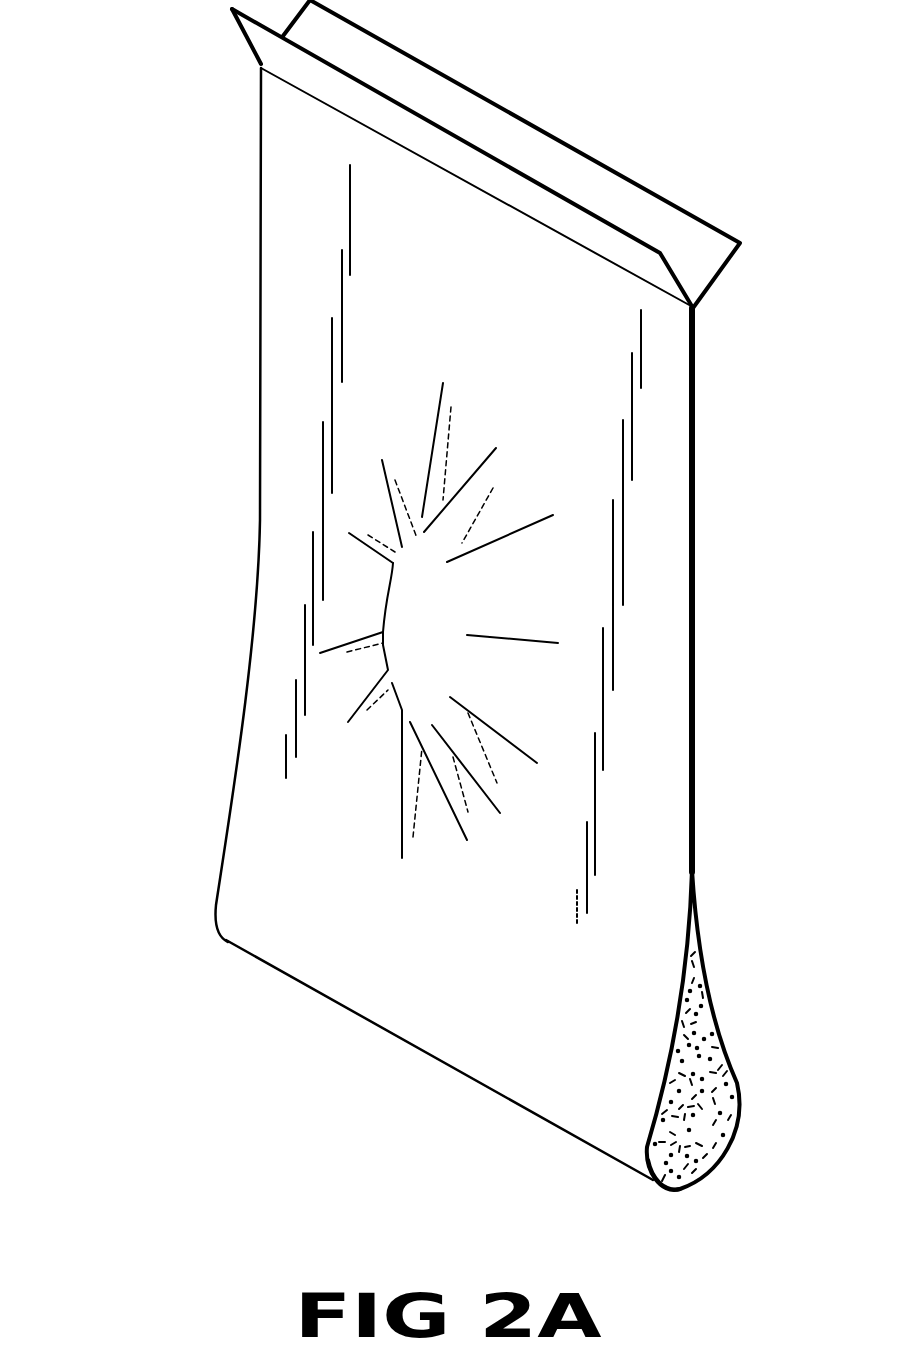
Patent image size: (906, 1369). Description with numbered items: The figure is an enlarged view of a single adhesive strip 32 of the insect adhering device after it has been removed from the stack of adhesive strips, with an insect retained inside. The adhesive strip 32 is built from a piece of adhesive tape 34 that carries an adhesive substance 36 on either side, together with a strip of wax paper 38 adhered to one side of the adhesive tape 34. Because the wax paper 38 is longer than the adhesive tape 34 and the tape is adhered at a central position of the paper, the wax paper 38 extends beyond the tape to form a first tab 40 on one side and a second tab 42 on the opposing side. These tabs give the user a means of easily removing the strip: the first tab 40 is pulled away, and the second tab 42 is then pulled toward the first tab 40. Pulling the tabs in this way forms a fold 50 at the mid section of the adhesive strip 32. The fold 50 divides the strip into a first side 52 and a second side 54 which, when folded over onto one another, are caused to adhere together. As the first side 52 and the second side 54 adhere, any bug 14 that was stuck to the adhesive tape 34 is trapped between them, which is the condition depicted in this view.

The adhesive strip 32 is at (142, 153).
The second tab 42 is at (672, 223).
The first tab 40 is at (655, 277).
The wax paper 38 is at (642, 648).
The first side 52 is at (423, 918).
The fold 50 is at (558, 1130).
The second side 54 is at (717, 1007).
The adhesive tape 34 is at (710, 1098).
The adhesive substance 36 is at (697, 1147).
The bug 14 is at (432, 648).